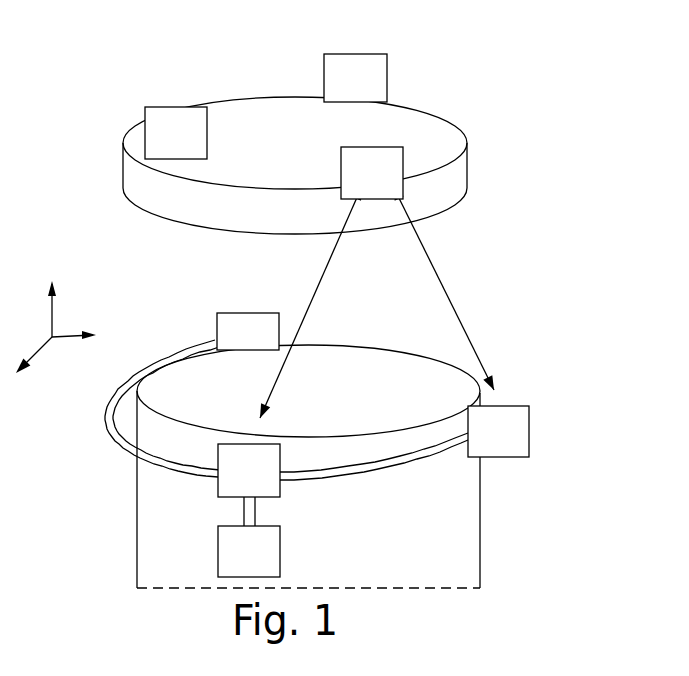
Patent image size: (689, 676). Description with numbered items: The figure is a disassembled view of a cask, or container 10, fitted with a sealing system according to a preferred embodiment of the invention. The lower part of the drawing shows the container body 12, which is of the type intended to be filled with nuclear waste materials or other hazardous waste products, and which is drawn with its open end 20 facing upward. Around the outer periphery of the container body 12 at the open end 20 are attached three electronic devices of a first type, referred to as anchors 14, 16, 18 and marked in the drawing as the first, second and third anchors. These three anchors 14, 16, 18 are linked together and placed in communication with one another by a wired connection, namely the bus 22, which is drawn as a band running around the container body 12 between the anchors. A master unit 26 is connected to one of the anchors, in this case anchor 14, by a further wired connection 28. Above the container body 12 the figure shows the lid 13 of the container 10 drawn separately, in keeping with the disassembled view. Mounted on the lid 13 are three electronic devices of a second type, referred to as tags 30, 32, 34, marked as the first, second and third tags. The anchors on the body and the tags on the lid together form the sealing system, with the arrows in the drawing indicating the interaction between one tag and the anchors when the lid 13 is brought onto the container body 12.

The cask 10 is at (495, 90).
The container body 12 is at (481, 520).
The lid 13 is at (289, 97).
The anchor 14 is at (218, 487).
The anchor 16 is at (529, 430).
The anchor 18 is at (245, 313).
The open end 20 is at (477, 387).
The bus 22 is at (110, 430).
The master unit 26 is at (218, 556).
The wired connection 28 is at (257, 505).
The tag 30 is at (403, 188).
The tag 32 is at (387, 70).
The tag 34 is at (145, 115).